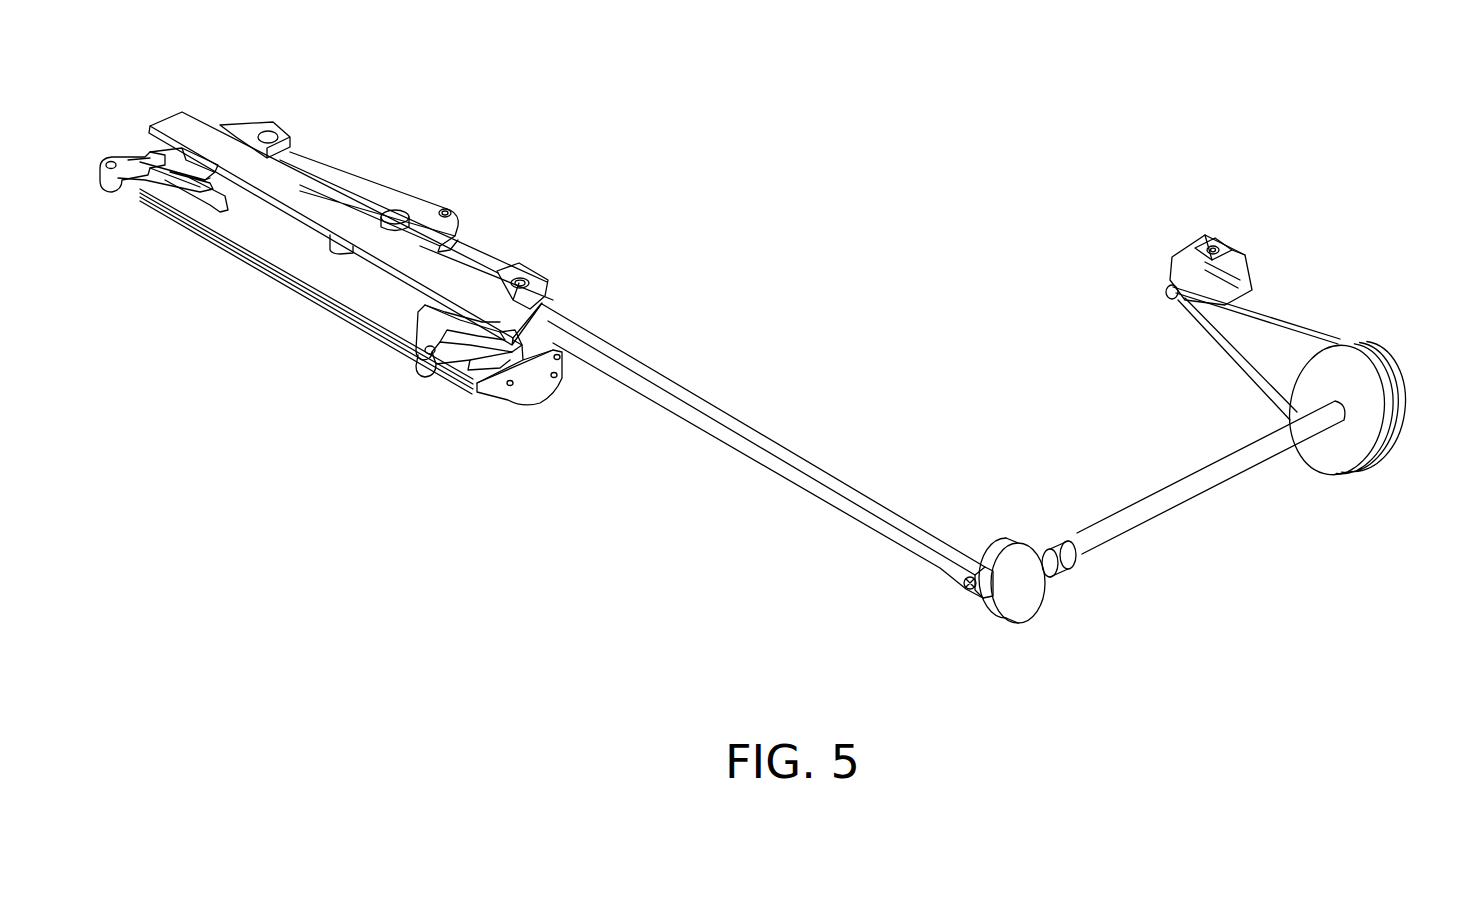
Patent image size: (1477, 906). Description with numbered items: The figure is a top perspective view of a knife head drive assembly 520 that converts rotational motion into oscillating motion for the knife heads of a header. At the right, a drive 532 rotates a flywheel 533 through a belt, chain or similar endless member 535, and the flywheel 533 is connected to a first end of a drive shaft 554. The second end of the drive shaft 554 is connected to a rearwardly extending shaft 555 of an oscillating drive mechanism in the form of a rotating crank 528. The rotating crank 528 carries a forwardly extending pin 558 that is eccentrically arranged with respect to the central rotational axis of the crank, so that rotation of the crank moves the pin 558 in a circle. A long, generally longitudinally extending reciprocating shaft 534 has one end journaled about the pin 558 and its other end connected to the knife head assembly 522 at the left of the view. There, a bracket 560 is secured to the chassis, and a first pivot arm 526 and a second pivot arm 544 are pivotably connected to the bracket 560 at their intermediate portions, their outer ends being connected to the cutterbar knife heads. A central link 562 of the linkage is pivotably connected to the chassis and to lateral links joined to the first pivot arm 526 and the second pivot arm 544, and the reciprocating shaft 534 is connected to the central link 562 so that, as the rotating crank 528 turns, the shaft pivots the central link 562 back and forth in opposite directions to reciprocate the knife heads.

The knife head drive assembly 520 is at (726, 348).
The knife head assembly 522 is at (349, 130).
The first pivot arm 526 is at (550, 300).
The rotating crank 528 is at (1037, 597).
The drive 532 is at (1245, 248).
The flywheel 533 is at (1399, 455).
The reciprocating shaft 534 is at (782, 452).
The endless member 535 is at (1273, 318).
The second pivot arm 544 is at (243, 123).
The drive shaft 554 is at (1163, 502).
The rearwardly extending shaft 555 is at (1050, 573).
The pin 558 is at (966, 590).
The bracket 560 is at (537, 380).
The central link 562 is at (428, 222).